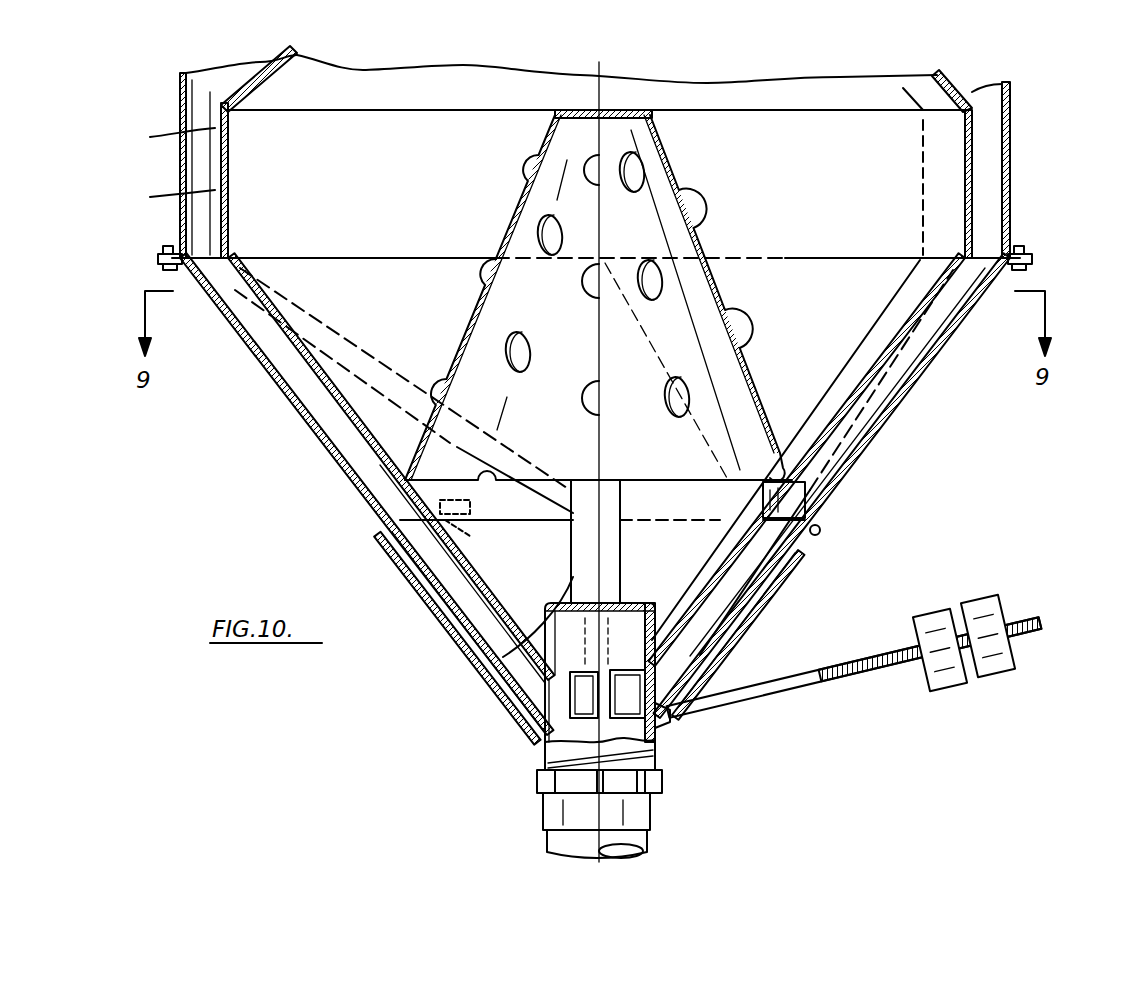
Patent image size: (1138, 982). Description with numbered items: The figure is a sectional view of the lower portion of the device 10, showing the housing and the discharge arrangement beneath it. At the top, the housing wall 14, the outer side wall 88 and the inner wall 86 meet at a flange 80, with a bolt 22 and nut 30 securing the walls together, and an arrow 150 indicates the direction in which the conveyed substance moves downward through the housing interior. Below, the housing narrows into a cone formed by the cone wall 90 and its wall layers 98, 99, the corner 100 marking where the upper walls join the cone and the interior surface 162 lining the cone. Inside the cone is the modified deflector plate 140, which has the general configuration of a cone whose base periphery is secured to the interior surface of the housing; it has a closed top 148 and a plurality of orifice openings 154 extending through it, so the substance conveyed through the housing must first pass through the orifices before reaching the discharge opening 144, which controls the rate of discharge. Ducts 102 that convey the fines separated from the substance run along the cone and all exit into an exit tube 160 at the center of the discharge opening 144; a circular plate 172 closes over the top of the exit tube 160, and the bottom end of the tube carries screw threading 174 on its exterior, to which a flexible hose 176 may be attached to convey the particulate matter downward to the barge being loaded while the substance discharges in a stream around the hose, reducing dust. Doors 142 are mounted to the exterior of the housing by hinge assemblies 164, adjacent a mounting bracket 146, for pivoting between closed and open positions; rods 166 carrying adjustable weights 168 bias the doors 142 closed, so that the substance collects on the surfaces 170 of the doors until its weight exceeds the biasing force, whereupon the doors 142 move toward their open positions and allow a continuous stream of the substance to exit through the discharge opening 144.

The hopper assembly 10 is at (1036, 150).
The outer wall 14 is at (1011, 200).
The bolt 22 is at (1030, 262).
The nut 30 is at (1022, 252).
The inclined flange 80 is at (952, 74).
The inner wall 86 is at (980, 92).
The outer side wall 88 is at (216, 125).
The hopper wall 90 is at (292, 357).
The liner 98 is at (472, 608).
The outer funnel wall 99 is at (330, 432).
The corner 100 is at (232, 257).
The ducts 102 is at (503, 657).
The perforated plate 140 is at (716, 232).
The doors 142 is at (385, 530).
The discharge opening 144 is at (674, 724).
The bracket 146 is at (820, 496).
The top flange 148 is at (655, 102).
The flow direction 150 is at (287, 178).
The apertures 154 is at (545, 235).
The exit tube 160 is at (542, 760).
The inner wall strip 162 is at (905, 385).
The hinge assemblies 164 is at (422, 558).
The rods 166 is at (843, 683).
The weights 168 is at (957, 680).
The surfaces of the doors 170 is at (770, 568).
The circular plate 172 is at (620, 600).
The screw threading 174 is at (672, 768).
The flexible hose 176 is at (547, 843).